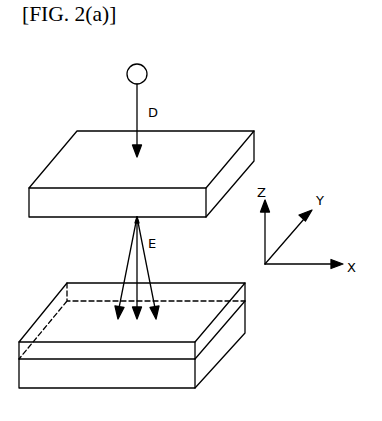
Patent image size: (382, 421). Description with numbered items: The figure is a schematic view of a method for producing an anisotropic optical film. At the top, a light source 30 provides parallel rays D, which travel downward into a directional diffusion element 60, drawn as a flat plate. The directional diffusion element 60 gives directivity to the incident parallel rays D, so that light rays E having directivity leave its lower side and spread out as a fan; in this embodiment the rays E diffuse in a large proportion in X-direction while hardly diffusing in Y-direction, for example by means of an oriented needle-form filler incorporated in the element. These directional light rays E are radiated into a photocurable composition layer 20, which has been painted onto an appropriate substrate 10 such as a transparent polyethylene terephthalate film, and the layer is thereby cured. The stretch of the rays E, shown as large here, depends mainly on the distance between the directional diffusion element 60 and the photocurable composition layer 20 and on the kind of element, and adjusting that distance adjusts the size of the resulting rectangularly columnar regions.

The substrate 10 is at (185, 380).
The photocurable composition layer 20 is at (185, 352).
The light source 30 is at (133, 77).
The directional diffusion element 60 is at (215, 152).